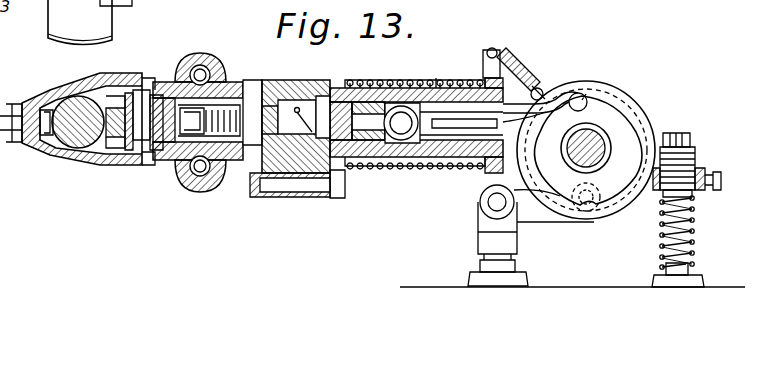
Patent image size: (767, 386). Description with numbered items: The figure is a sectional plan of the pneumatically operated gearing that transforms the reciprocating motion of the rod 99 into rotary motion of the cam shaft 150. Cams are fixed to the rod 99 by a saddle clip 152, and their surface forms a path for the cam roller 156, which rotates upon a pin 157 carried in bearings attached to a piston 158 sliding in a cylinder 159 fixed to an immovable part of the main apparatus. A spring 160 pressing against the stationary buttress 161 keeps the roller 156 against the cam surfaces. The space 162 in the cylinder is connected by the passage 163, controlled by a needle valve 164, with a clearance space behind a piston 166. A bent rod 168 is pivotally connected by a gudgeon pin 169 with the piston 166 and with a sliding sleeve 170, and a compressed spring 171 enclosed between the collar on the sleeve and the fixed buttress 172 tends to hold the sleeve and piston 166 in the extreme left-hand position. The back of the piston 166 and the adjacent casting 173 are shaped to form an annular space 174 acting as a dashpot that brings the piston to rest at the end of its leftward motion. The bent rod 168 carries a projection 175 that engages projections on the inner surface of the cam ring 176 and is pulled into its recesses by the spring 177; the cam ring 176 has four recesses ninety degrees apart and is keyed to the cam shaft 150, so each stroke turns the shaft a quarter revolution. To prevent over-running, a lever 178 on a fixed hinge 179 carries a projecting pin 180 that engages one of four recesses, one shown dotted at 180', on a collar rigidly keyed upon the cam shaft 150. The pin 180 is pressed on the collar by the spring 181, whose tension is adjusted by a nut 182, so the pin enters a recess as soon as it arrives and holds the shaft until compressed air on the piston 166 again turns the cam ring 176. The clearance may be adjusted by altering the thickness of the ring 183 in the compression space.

The rod 99 is at (70, 150).
The cam shaft 150 is at (594, 140).
The saddle clip 152 is at (44, 86).
The cam roller 156 is at (144, 116).
The pin 157 is at (164, 96).
The piston 158 is at (182, 72).
The cylinder 159 is at (232, 84).
The spring 160 is at (168, 150).
The stationary buttress 161 is at (252, 116).
The space 162 is at (245, 162).
The passage 163 is at (326, 96).
The needle valve 164 is at (310, 118).
The piston 166 is at (364, 160).
The bent rod 168 is at (552, 96).
The gudgeon pin 169 is at (404, 168).
The sliding sleeve 170 is at (408, 80).
The spring 171 is at (445, 80).
The fixed buttress 172 is at (484, 64).
The casting 173 is at (298, 162).
The annular space 174 is at (364, 92).
The projection 175 is at (578, 98).
The cam ring 176 is at (622, 102).
The spring 177 is at (512, 62).
The lever 178 is at (542, 222).
The fixed hinge 179 is at (490, 204).
The projecting pin 180 is at (591, 220).
The recess 180' is at (615, 150).
The spring 181 is at (694, 224).
The nut 182 is at (682, 158).
The ring 183 is at (232, 170).